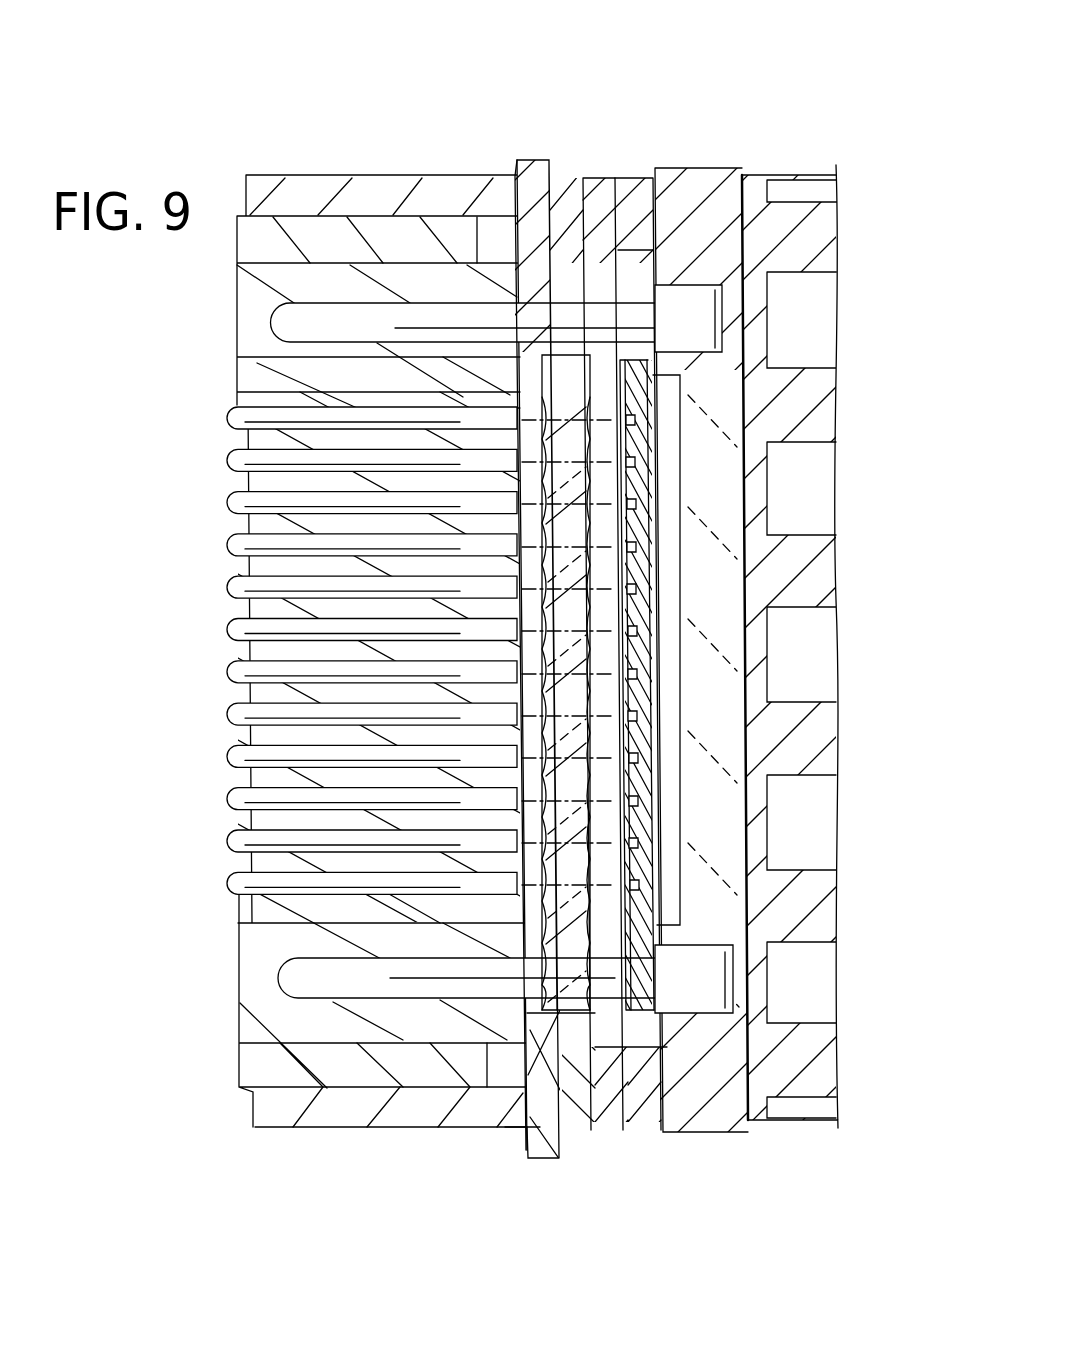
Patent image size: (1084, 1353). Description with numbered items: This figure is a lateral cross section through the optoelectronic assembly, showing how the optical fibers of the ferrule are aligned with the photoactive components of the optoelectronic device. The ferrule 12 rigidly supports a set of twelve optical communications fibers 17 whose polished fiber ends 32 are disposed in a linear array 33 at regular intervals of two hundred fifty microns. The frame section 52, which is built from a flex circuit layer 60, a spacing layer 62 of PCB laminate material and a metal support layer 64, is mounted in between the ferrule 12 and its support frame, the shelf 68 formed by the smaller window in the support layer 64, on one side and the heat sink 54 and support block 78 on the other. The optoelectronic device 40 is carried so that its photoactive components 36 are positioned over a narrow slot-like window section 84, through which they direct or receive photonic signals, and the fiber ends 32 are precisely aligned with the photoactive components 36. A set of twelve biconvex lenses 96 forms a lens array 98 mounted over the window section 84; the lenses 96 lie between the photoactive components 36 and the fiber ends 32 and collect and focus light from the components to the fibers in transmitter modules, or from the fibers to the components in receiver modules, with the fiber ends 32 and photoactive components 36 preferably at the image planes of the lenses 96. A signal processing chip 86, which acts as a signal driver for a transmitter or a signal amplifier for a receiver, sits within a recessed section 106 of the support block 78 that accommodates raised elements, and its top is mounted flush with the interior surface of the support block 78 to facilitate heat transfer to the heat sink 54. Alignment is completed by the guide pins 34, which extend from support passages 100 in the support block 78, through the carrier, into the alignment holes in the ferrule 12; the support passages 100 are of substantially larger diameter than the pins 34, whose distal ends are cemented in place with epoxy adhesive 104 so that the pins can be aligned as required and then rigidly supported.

The ferrule 12 is at (583, 160).
The optical communications fibers 17 is at (228, 505).
The polished fiber ends 32 is at (300, 390).
The linear array 33 is at (160, 645).
The guide pins 34 is at (290, 322).
The photoactive components 36 is at (640, 868).
The optoelectronic device 40 is at (745, 935).
The frame section 52 is at (612, 50).
The heat sink 54 is at (893, 528).
The flex circuit layer 60 is at (645, 178).
The spacing layer 62 is at (618, 178).
The support layer 64 is at (547, 165).
The shelf 68 is at (562, 1157).
The support block 78 is at (700, 168).
The window section 84 is at (545, 366).
The signal processing chip 86 is at (640, 625).
The lenses 96 is at (580, 740).
The lens array 98 is at (540, 908).
The support passages 100 is at (724, 315).
The epoxy adhesive 104 is at (700, 362).
The recessed section 106 is at (682, 405).